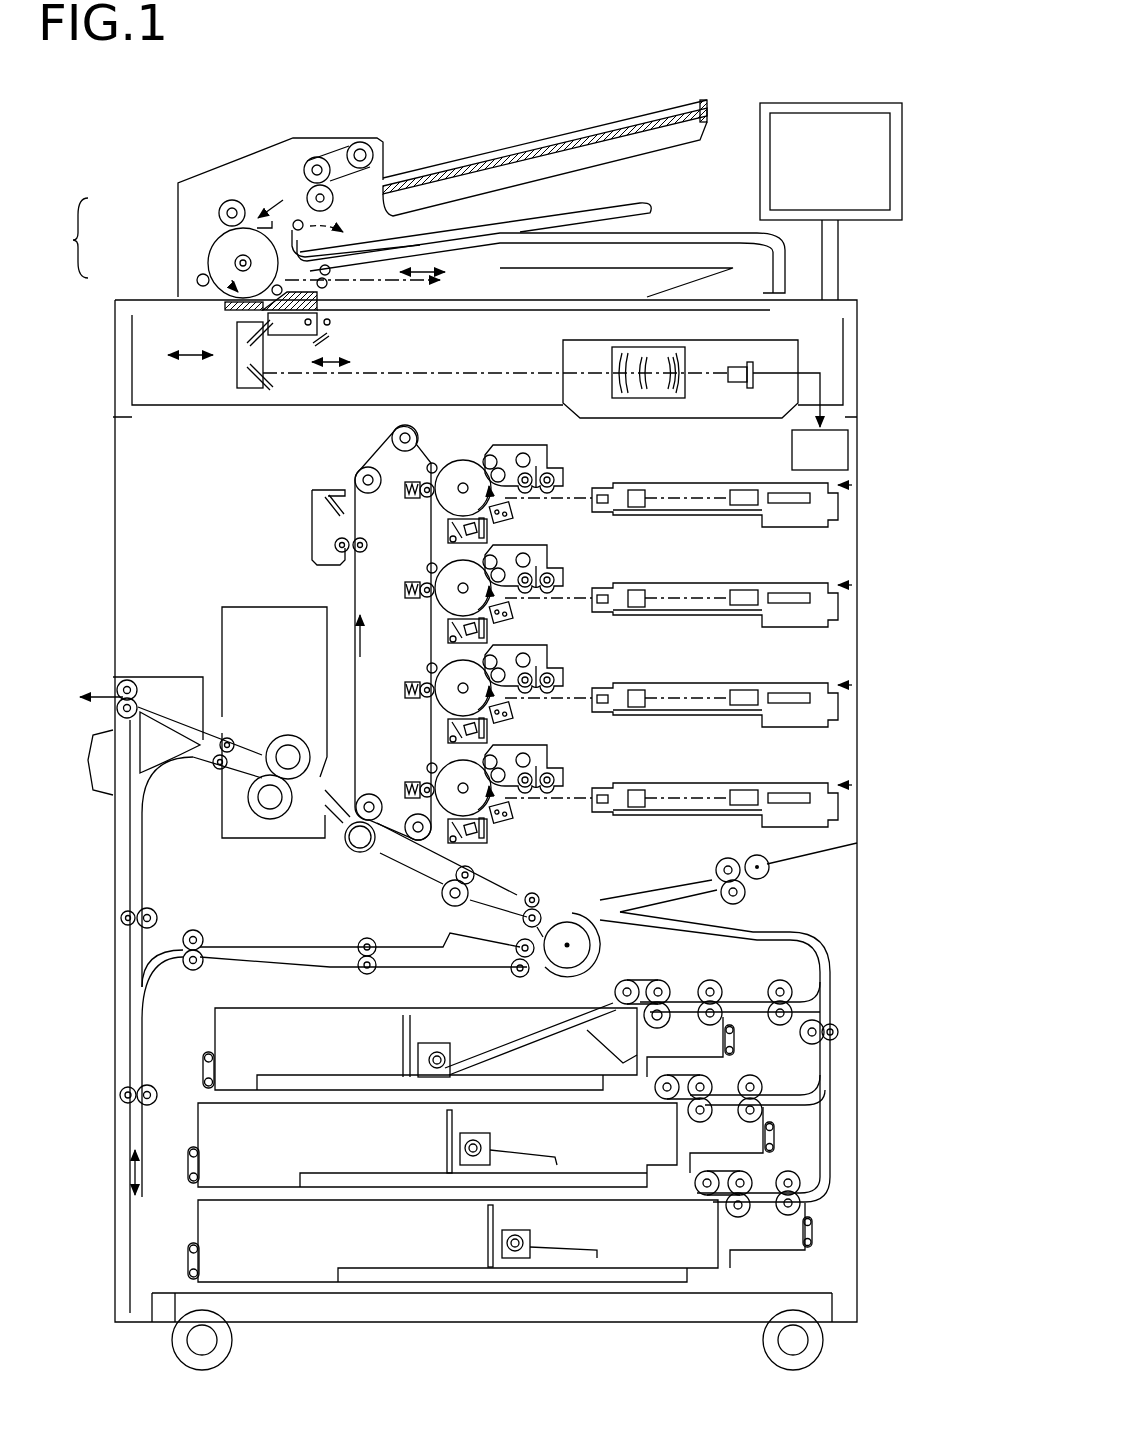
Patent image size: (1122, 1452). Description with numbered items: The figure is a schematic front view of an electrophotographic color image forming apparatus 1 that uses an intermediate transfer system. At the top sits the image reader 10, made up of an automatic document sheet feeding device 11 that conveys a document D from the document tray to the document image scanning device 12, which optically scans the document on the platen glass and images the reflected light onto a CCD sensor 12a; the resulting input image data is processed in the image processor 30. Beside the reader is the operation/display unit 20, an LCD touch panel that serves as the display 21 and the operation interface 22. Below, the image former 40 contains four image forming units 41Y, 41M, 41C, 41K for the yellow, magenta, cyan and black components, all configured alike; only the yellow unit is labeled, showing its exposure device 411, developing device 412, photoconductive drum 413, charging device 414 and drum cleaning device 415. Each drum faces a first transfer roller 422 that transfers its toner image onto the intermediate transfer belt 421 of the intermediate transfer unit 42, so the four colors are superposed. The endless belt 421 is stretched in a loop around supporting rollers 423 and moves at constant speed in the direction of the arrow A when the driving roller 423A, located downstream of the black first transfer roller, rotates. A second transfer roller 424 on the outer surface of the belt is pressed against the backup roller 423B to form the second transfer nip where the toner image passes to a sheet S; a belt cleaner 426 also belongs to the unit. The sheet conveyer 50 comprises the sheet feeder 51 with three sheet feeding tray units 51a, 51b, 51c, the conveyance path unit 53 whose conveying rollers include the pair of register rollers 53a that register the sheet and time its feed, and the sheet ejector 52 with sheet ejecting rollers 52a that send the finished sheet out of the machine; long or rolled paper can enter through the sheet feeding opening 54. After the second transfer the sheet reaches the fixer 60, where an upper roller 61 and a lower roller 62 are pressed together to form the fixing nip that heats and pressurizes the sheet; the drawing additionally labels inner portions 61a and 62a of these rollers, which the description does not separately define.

The image forming apparatus 1 is at (486, 100).
The document D is at (558, 132).
The operation/display unit 20 is at (782, 103).
The display 21 is at (830, 161).
The operation interface 22 is at (830, 260).
The image reader 10 is at (65, 238).
The automatic document sheet feeding device 11 is at (177, 238).
The document image scanning device 12 is at (152, 302).
The CCD sensor 12a is at (758, 362).
The image processor 30 is at (850, 456).
The image former 40 is at (222, 473).
The intermediate transfer unit 42 is at (336, 667).
The intermediate transfer belt 421 is at (353, 592).
The supporting rollers 423 is at (364, 466).
The driving roller 423A is at (425, 840).
The backup roller 423B is at (372, 794).
The second transfer roller 424 is at (351, 850).
The belt cleaner 426 is at (310, 493).
The belt moving direction arrow A is at (372, 636).
The image forming unit for Y color component 41Y is at (611, 498).
The image forming unit for M color component 41M is at (603, 576).
The image forming unit for C color component 41C is at (603, 676).
The image forming unit for K color component 41K is at (603, 776).
The exposure device 411 is at (722, 483).
The developing device 412 is at (562, 465).
The photoconductive drum 413 is at (462, 470).
The charging device 414 is at (513, 513).
The drum cleaning device 415 is at (448, 532).
The first transfer roller 422 is at (432, 498).
The fixer 60 is at (257, 716).
The upper roller 61 is at (282, 742).
The roller core 61a is at (292, 748).
The lower roller 62 is at (253, 790).
The roller core 62a is at (267, 800).
The sheet ejector 52 is at (151, 972).
The sheet ejecting rollers 52a is at (133, 702).
The conveyance path unit 53 is at (431, 900).
The pair of register rollers 53a is at (467, 894).
The sheet feeding opening 54 is at (864, 842).
The sheet conveyer 50 is at (837, 1005).
The sheet feeder 51 is at (433, 1124).
The sheet feeding tray unit 51a is at (230, 1043).
The sheet feeding tray unit 51b is at (220, 1145).
The sheet feeding tray unit 51c is at (220, 1240).
The sheet S is at (533, 1017).